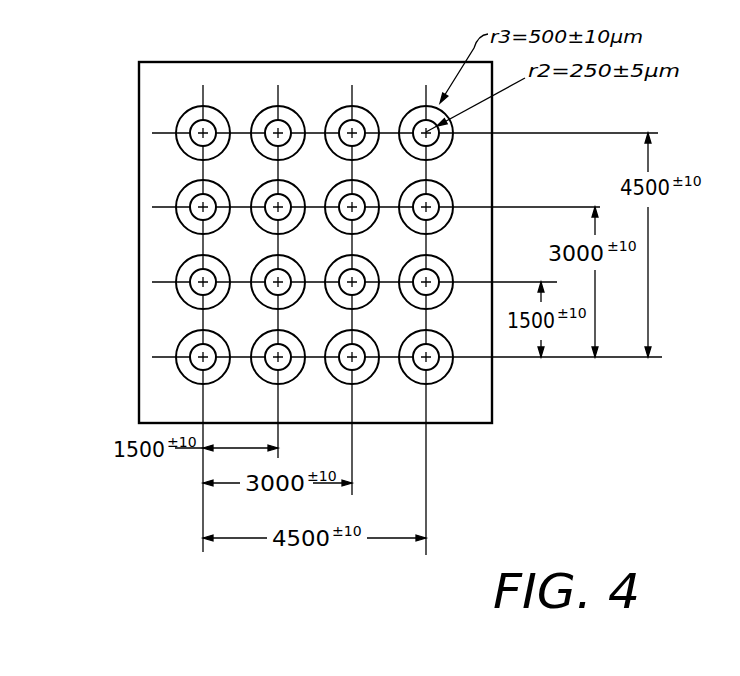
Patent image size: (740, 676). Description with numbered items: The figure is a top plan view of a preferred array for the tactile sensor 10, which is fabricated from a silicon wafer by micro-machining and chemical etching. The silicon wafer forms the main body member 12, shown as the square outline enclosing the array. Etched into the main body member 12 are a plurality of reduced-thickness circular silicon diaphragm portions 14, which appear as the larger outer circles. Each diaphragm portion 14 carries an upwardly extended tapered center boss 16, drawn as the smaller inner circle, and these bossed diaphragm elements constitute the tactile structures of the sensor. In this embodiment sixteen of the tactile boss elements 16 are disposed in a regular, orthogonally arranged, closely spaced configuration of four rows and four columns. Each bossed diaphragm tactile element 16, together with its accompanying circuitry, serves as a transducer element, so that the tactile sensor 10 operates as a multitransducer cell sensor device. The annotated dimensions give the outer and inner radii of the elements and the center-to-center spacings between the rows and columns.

The tactile sensor 10 is at (120, 106).
The main body member 12 is at (157, 172).
The circular silicon diaphragm portions 14 is at (178, 218).
The tapered center boss 16 is at (192, 285).